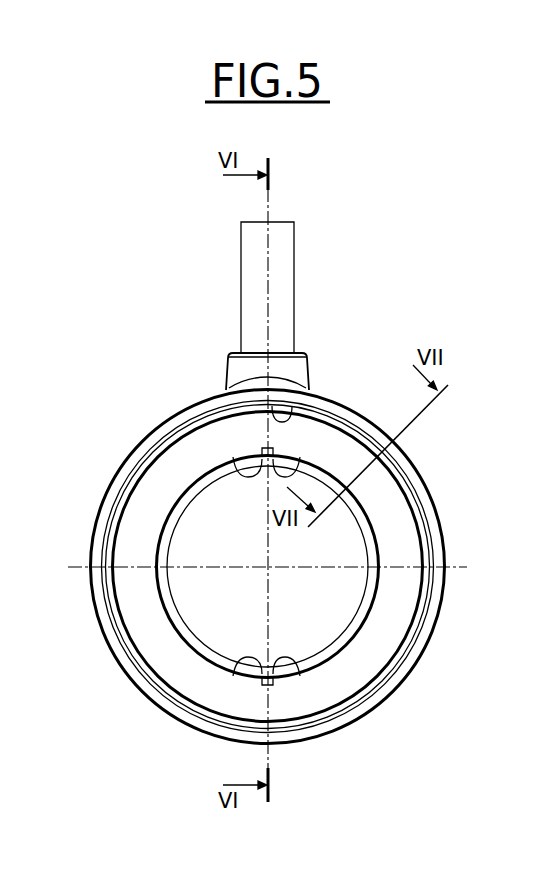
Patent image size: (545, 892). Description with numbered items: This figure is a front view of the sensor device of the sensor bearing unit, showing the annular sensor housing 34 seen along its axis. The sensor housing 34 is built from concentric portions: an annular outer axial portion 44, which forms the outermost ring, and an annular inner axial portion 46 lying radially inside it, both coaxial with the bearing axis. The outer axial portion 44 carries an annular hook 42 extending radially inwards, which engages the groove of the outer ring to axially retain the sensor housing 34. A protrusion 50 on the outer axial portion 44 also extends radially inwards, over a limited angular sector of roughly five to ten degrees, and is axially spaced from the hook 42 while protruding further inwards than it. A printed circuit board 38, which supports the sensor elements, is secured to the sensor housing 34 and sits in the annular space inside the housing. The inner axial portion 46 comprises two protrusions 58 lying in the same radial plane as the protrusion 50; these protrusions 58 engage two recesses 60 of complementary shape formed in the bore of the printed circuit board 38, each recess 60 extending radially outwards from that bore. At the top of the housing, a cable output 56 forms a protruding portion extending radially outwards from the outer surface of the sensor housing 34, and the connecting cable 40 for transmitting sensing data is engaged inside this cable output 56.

The sensor housing 34 is at (118, 667).
The printed circuit board 38 is at (142, 495).
The connecting cable 40 is at (247, 273).
The annular hook 42 is at (431, 634).
The annular outer axial portion 44 is at (414, 672).
The annular inner axial portion 46 is at (372, 605).
The protrusion 50 is at (310, 390).
The cable output 56 is at (228, 363).
The protrusions 58 is at (293, 473).
The recesses 60 is at (228, 464).